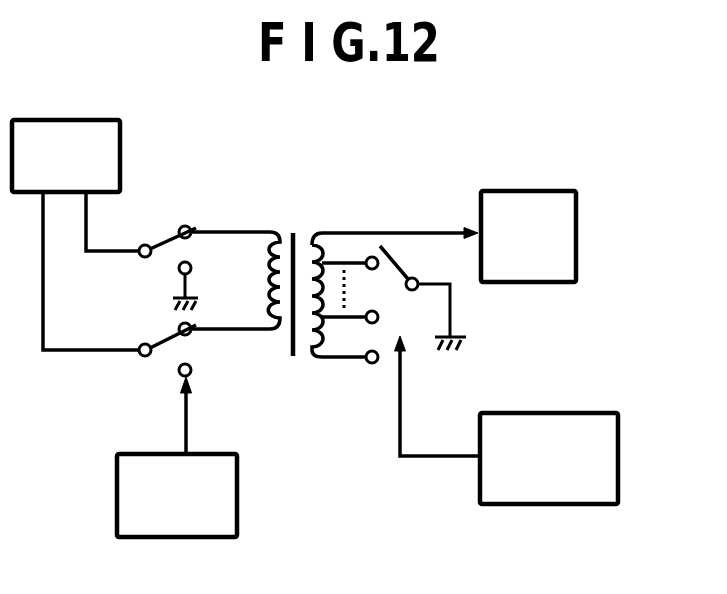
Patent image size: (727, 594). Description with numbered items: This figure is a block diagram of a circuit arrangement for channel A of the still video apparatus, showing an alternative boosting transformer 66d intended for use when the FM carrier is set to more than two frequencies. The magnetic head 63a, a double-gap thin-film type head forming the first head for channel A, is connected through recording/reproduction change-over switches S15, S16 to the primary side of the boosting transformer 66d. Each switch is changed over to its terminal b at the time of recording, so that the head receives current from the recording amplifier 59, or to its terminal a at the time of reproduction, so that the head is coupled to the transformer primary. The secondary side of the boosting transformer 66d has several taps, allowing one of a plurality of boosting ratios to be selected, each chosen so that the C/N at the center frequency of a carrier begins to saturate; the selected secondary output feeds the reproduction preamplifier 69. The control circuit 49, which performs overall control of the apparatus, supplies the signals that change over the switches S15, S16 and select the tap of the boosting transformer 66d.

The magnetic head 63a is at (97, 120).
The recording/reproduction change-over switch S15 is at (168, 240).
The recording/reproduction change-over switch S16 is at (170, 357).
The boosting transformer 66d is at (292, 359).
The reproduction preamplifier 69 is at (565, 191).
The control circuit 49 is at (602, 413).
The recording amplifier 59 is at (117, 500).